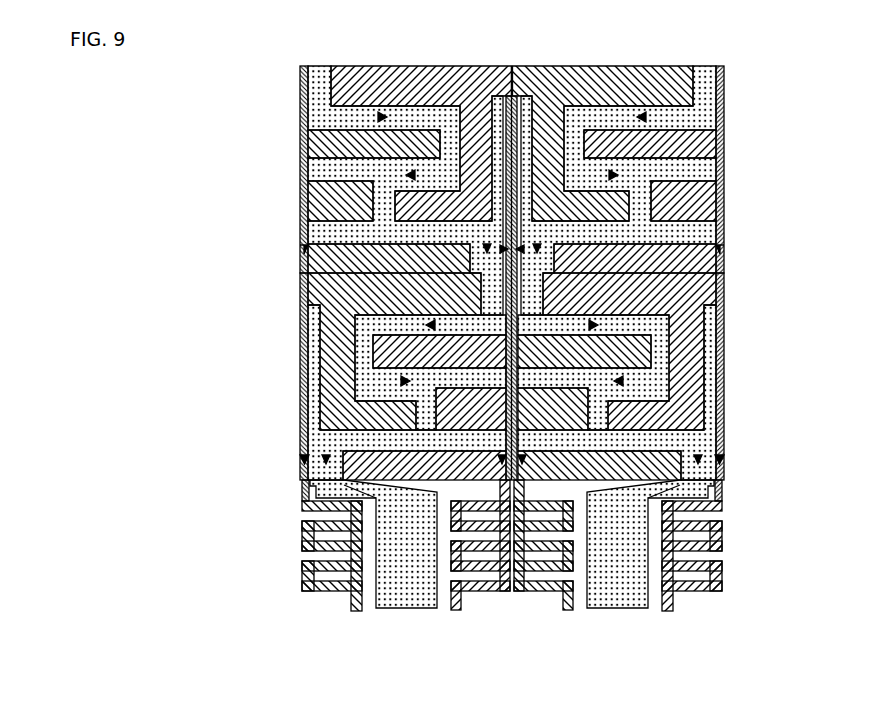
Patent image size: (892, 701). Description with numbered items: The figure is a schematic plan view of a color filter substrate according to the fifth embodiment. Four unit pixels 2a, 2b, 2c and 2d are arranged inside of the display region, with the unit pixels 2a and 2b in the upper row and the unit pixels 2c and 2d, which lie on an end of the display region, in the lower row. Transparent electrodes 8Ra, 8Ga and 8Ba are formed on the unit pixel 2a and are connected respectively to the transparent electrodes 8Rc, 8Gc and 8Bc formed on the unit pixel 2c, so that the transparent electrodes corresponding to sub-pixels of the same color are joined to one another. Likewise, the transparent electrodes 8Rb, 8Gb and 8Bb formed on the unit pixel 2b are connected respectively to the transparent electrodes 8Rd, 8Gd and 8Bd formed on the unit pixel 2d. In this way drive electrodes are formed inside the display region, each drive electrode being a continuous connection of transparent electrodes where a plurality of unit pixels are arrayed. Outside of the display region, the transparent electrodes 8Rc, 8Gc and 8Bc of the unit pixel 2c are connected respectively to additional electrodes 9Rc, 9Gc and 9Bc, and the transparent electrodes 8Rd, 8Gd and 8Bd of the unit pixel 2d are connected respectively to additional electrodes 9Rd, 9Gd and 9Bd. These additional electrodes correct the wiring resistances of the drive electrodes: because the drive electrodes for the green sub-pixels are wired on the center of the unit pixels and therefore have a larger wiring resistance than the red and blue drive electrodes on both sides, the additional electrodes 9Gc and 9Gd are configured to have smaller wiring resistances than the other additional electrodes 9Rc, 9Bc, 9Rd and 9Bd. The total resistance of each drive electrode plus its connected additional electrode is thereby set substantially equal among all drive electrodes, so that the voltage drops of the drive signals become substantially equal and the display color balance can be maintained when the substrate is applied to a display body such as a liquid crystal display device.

The unit pixel 2a is at (272, 104).
The unit pixel 2b is at (736, 110).
The unit pixel 2c is at (272, 387).
The unit pixel 2d is at (733, 389).
The transparent electrode 8Ra is at (327, 133).
The transparent electrode 8Ga is at (315, 62).
The transparent electrode 8Ba is at (358, 67).
The transparent electrode 8Rb is at (638, 72).
The transparent electrode 8Gb is at (695, 60).
The transparent electrode 8Bb is at (680, 120).
The transparent electrode 8Rc is at (293, 273).
The transparent electrode 8Gc is at (305, 313).
The transparent electrode 8Bc is at (380, 337).
The transparent electrode 8Rd is at (628, 348).
The transparent electrode 8Gd is at (705, 308).
The transparent electrode 8Bd is at (705, 280).
The additional electrode 9Rc is at (302, 585).
The additional electrode 9Gc is at (392, 597).
The additional electrode 9Bc is at (447, 602).
The additional electrode 9Rd is at (548, 569).
The additional electrode 9Gd is at (616, 597).
The additional electrode 9Bd is at (706, 585).